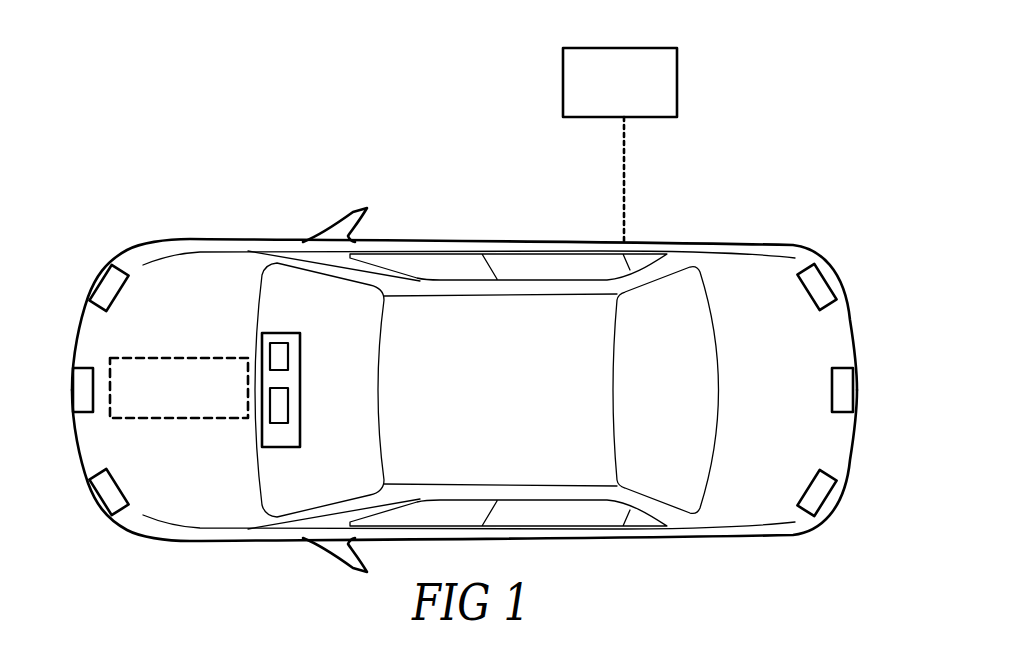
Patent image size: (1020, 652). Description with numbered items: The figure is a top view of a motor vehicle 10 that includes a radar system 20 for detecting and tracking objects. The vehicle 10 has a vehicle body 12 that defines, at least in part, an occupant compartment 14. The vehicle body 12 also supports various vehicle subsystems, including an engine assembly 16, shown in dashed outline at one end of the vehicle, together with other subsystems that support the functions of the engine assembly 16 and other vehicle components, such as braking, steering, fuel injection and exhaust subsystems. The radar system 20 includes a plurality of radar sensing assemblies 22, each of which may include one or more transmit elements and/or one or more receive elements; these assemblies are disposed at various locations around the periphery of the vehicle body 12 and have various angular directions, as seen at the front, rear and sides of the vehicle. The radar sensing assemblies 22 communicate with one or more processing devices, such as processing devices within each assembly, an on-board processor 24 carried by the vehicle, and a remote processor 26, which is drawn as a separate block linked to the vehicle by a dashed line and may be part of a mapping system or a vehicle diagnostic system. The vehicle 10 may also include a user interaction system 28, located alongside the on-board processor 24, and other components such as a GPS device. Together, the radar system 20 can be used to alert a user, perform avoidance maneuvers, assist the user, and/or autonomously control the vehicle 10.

The motor vehicle 10 is at (287, 238).
The vehicle body 12 is at (697, 517).
The occupant compartment 14 is at (535, 470).
The engine assembly 16 is at (153, 358).
The radar system 20 is at (444, 197).
The radar sensing assemblies 22 is at (107, 290).
The on-board processor 24 is at (279, 357).
The remote processor 26 is at (663, 80).
The user interaction system 28 is at (279, 404).